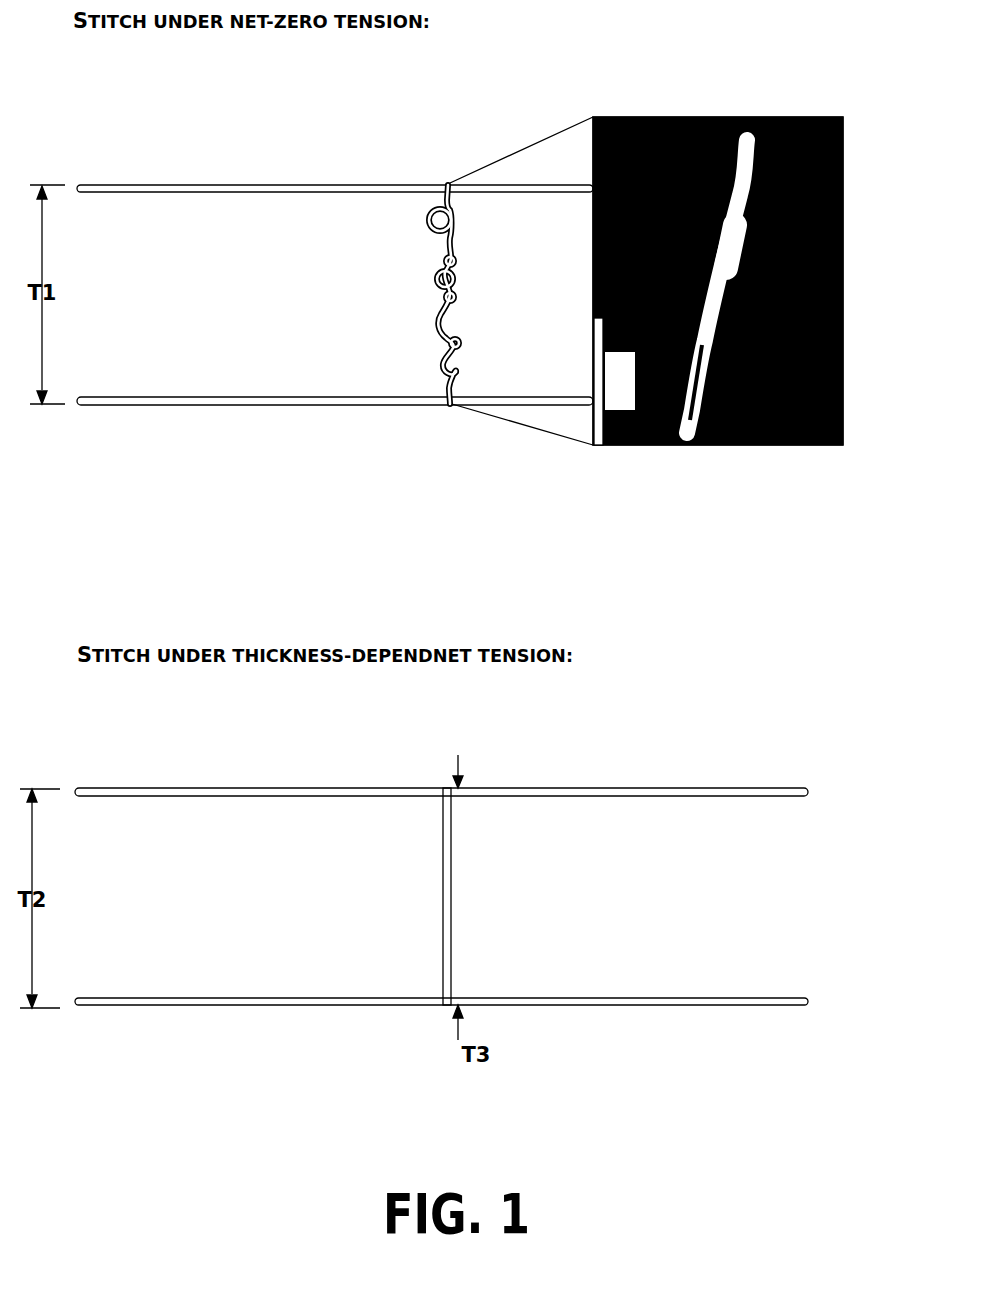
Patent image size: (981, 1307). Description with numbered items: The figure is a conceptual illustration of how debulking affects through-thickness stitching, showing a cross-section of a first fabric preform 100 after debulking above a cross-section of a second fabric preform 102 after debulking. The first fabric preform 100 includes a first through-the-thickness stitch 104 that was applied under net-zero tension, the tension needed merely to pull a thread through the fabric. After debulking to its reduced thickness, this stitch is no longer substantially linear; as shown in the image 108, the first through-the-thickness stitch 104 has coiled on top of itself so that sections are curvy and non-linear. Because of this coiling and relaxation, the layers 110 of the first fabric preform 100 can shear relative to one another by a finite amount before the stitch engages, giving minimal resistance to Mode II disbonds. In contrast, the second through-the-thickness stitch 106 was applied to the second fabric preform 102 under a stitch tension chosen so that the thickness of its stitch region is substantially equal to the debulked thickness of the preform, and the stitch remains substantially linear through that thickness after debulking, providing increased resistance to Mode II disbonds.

The first fabric preform 100 is at (103, 185).
The second fabric preform 102 is at (120, 790).
The first through-the-thickness stitch 104 is at (440, 320).
The second through-the-thickness stitch 106 is at (442, 922).
The image 108 is at (765, 248).
The layers 110 is at (852, 177).